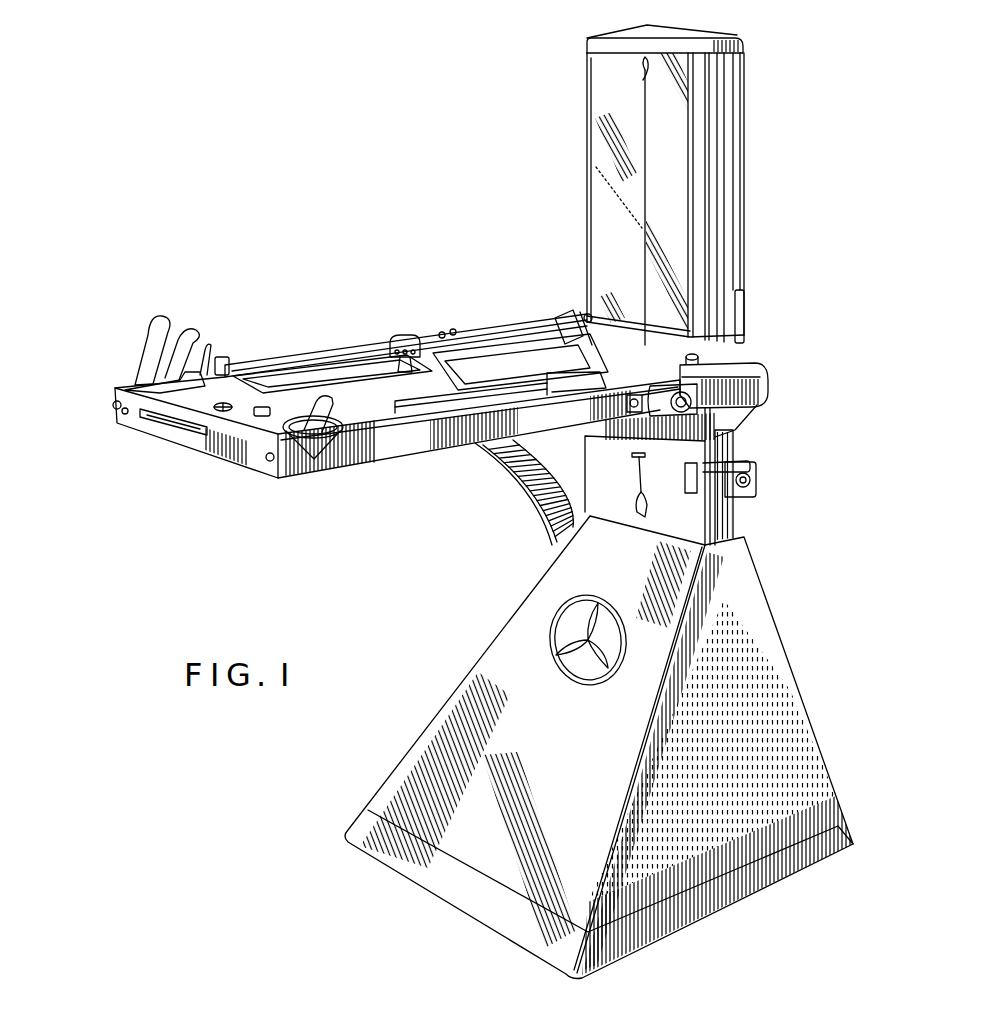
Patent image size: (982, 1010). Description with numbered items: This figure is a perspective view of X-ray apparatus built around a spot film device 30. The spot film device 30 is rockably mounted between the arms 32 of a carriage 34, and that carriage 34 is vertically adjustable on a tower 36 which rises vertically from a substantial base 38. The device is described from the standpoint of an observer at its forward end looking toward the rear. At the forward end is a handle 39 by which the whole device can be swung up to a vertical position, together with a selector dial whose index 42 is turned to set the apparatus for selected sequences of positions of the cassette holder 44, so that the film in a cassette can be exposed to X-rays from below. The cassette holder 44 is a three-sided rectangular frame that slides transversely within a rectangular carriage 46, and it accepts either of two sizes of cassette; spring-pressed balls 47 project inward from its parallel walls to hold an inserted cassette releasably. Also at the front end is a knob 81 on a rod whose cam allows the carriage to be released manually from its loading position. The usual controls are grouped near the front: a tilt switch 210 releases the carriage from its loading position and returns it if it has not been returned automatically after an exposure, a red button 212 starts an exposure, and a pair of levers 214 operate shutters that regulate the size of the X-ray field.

The spot film device 30 is at (371, 466).
The arms 32 is at (757, 410).
The carriage 34 is at (733, 440).
The tower 36 is at (735, 231).
The base 38 is at (500, 650).
The handle 39 is at (183, 437).
The index 42 is at (320, 400).
The cassette holder 44 is at (610, 279).
The carriage 46 is at (520, 357).
The spring-pressed balls 47 is at (565, 313).
The knob 81 is at (110, 405).
The tilt switch 210 is at (263, 418).
The red button 212 is at (224, 413).
The levers 214 is at (180, 336).